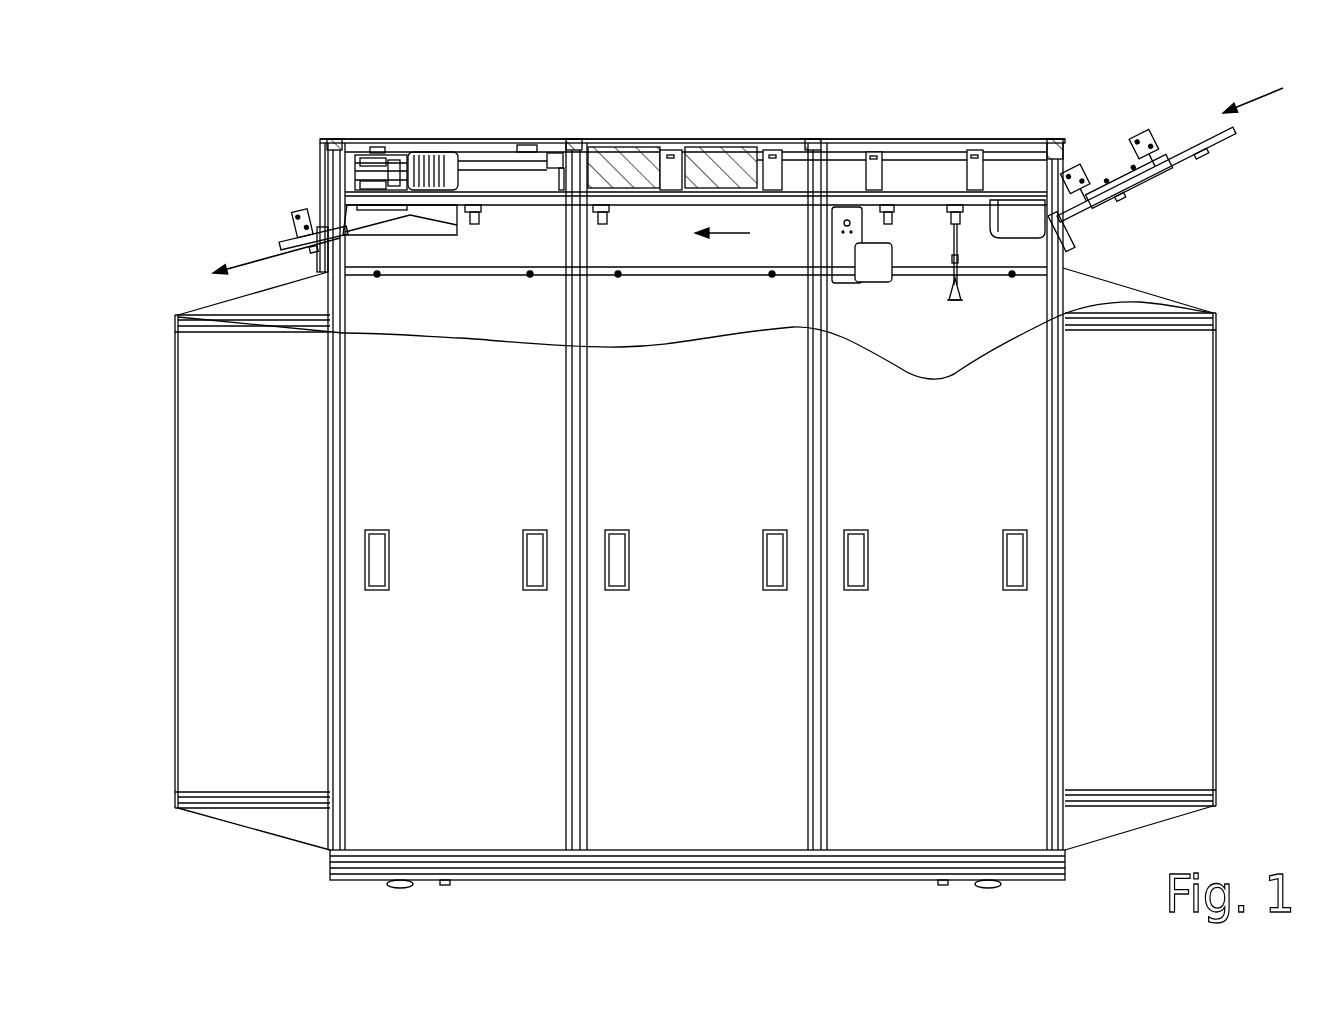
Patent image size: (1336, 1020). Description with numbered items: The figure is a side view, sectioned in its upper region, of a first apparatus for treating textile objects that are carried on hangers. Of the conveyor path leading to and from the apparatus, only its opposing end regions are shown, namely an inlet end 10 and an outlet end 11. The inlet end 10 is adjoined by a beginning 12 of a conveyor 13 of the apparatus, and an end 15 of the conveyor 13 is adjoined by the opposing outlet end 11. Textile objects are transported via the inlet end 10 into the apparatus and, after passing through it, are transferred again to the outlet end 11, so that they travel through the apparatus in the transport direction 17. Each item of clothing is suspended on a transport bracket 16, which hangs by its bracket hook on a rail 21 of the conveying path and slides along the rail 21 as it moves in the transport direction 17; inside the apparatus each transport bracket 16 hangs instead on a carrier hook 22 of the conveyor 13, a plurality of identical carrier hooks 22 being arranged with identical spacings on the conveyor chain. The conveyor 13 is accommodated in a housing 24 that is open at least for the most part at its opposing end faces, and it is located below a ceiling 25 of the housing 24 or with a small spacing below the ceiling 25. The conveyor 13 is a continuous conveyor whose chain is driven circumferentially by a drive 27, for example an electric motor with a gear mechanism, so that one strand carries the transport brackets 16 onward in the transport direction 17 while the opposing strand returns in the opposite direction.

The inlet end 10 is at (1183, 148).
The outlet end 11 is at (293, 228).
The beginning of the conveyor 12 is at (1043, 227).
The conveyor 13 is at (911, 246).
The end of the conveyor 15 is at (380, 227).
The transport bracket 16 is at (957, 270).
The transport direction 17 is at (238, 260).
The rail 21 is at (1207, 147).
The carrier hook 22 is at (481, 218).
The housing 24 is at (220, 862).
The ceiling 25 is at (783, 139).
The drive 27 is at (453, 158).